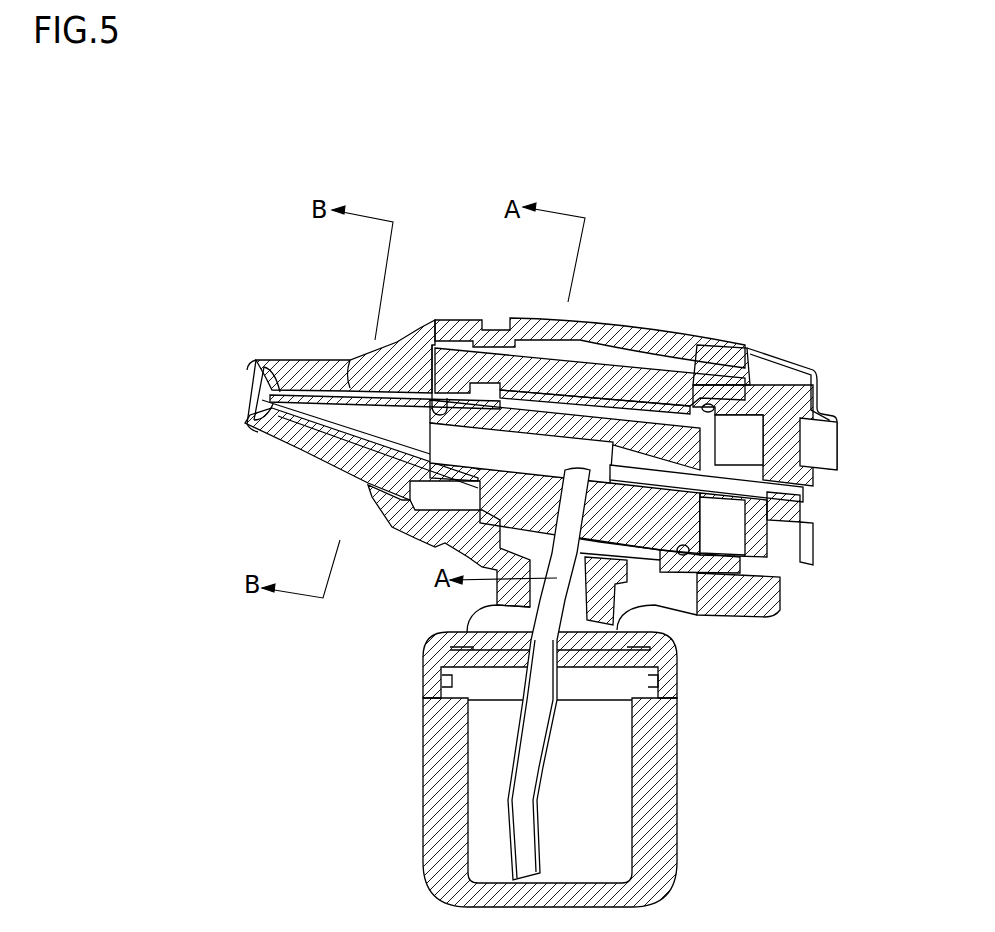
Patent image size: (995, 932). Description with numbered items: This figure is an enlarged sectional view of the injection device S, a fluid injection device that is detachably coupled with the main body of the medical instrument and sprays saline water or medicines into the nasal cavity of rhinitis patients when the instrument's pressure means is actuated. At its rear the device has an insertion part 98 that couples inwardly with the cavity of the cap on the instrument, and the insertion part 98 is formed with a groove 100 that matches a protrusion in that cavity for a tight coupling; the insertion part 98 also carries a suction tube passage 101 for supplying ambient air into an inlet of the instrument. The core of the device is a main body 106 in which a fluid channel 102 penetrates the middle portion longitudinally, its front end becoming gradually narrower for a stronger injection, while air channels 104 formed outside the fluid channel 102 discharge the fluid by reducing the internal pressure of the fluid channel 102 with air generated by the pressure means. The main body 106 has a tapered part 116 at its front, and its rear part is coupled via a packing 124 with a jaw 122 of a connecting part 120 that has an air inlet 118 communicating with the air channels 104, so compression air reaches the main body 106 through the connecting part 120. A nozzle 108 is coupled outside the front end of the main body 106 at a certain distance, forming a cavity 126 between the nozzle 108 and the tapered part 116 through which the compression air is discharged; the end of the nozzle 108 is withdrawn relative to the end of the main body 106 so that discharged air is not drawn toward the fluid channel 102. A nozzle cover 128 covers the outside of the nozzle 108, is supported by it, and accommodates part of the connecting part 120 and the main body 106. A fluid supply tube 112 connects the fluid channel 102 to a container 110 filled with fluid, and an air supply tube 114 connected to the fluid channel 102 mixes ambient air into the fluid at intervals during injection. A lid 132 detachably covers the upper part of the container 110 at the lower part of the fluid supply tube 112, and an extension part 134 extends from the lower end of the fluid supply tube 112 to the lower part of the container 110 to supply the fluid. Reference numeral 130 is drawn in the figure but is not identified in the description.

The insertion part 98 is at (727, 620).
The groove 100 is at (760, 617).
The suction tube passage 101 is at (786, 360).
The fluid channel 102 is at (430, 395).
The air channels 104 is at (600, 385).
The main body of the injection device 106 is at (658, 340).
The nozzle 108 is at (306, 372).
The container 110 is at (672, 802).
The fluid supply tube 112 is at (482, 598).
The air supply tube 114 is at (800, 497).
The tapered part 116 is at (462, 330).
The air inlet 118 is at (812, 543).
The connecting part 120 is at (813, 522).
The jaw 122 is at (707, 340).
The packing 124 is at (740, 362).
The cavity 126 is at (358, 365).
The nozzle cover 128 is at (256, 358).
The cover 130 is at (520, 319).
The lid 132 is at (437, 666).
The extension part 134 is at (517, 818).
The injection device S is at (800, 262).